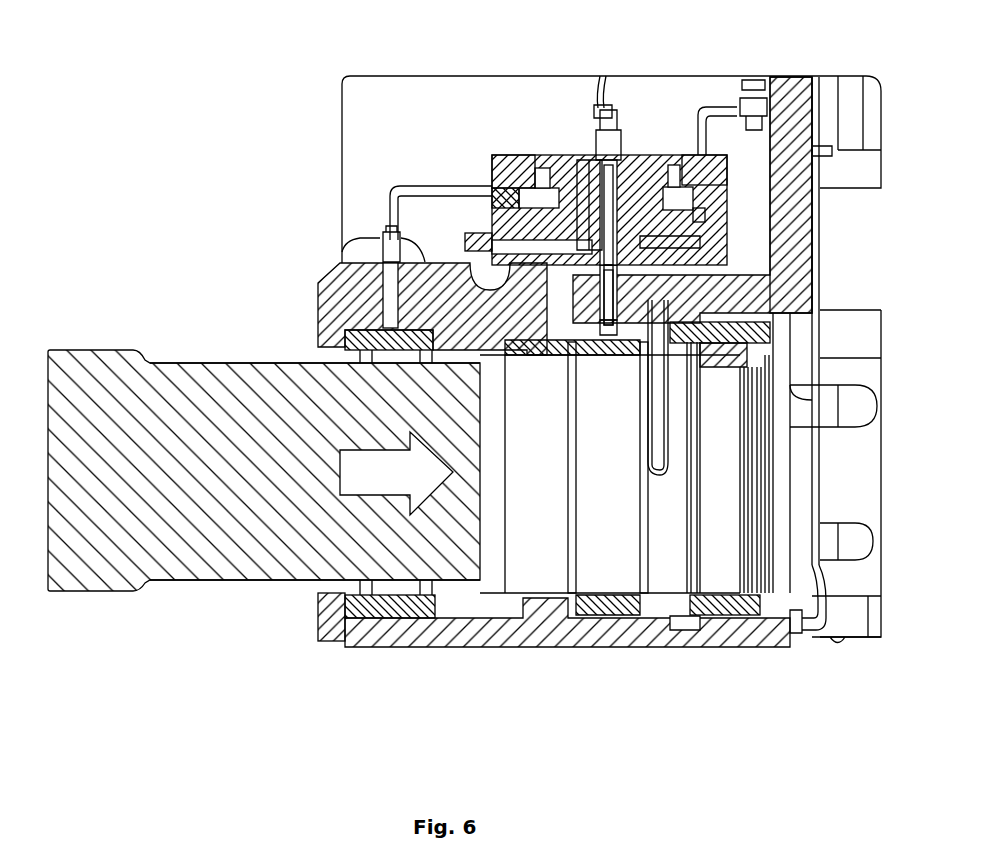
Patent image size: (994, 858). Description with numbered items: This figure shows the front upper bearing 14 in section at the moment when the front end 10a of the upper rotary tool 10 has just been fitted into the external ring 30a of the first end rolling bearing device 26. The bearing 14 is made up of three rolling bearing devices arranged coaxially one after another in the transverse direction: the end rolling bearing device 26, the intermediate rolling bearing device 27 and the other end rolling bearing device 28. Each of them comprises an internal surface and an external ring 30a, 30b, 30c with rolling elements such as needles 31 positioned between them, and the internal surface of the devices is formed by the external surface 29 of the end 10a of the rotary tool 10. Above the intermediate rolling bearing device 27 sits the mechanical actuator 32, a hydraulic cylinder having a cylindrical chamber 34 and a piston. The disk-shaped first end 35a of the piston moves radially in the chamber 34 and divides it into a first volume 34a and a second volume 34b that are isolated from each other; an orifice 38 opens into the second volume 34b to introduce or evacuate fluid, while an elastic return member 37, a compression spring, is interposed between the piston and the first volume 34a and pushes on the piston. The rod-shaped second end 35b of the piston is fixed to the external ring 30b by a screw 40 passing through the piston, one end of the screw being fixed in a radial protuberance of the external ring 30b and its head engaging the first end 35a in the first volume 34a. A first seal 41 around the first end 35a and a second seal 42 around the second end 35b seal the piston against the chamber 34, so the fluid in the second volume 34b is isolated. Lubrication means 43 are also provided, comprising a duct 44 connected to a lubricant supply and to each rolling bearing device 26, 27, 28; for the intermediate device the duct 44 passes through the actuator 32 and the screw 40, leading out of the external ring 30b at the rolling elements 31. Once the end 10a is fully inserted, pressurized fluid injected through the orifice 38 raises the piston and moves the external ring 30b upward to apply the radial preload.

The upper rotary tool 10 is at (82, 345).
The front end of the upper rotary tool 10a is at (185, 388).
The front upper bearing 14 is at (657, 606).
The end rolling bearing device 26 is at (364, 656).
The intermediate rolling bearing device 27 is at (629, 658).
The end rolling bearing device 28 is at (768, 658).
The external surface of the end of the rotary tool 29 is at (197, 582).
The external ring 30a is at (420, 612).
The external ring 30b is at (614, 612).
The external ring 30c is at (735, 606).
The needles 31 is at (570, 606).
The mechanical actuator 32 is at (538, 128).
The cylindrical chamber 34 is at (722, 155).
The first volume 34a is at (578, 172).
The second volume 34b is at (527, 235).
The first end of the piston 35a is at (638, 195).
The second end of the piston 35b is at (616, 290).
The elastic return member 37 is at (528, 168).
The orifice 38 is at (460, 236).
The screw 40 is at (622, 165).
The first seal 41 is at (705, 216).
The second seal 42 is at (700, 250).
The lubrication means 43 is at (376, 240).
The duct 44 is at (372, 300).